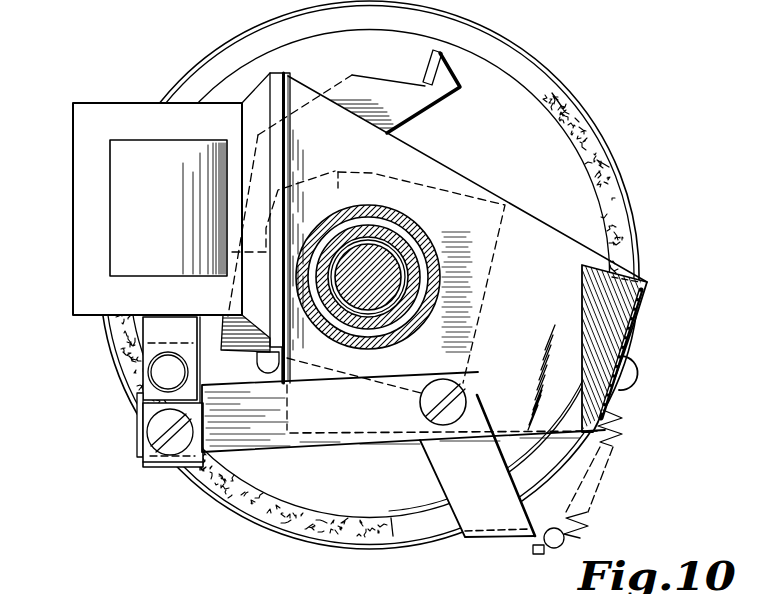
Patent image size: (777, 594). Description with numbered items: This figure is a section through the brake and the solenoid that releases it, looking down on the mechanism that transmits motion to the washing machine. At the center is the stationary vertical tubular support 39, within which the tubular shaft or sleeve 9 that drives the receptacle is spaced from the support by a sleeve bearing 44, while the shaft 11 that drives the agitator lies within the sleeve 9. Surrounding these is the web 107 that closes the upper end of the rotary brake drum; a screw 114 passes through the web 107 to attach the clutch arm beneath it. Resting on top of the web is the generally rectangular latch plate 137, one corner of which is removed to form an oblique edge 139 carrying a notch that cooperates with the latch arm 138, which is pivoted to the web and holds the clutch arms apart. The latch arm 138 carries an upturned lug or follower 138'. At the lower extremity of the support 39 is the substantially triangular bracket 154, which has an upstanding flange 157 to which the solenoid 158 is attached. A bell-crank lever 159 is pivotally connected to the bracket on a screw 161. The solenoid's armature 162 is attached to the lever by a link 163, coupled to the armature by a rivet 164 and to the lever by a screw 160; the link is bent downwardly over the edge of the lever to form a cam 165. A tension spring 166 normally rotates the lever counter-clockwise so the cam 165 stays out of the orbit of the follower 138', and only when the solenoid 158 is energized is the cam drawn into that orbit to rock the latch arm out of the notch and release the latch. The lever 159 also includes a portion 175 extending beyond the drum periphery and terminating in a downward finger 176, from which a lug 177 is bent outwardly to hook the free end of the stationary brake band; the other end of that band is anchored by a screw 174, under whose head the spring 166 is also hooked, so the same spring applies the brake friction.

The web 107 is at (570, 183).
The screw 114 is at (345, 560).
The solenoid 158 is at (128, 212).
The upstanding flange 157 is at (274, 72).
The bracket 154 is at (583, 263).
The upturned lug or follower 138' is at (469, 71).
The latch arm 138 is at (386, 80).
The oblique edge 139 is at (345, 182).
The latch plate 137 is at (518, 215).
The vertical tubular support 39 is at (437, 287).
The sleeve bearing 44 is at (422, 270).
The tubular shaft or sleeve 9 is at (410, 258).
The shaft 11 is at (387, 257).
The armature 162 is at (160, 335).
The rivet 164 is at (160, 372).
The screw 160 is at (157, 430).
The link 163 is at (140, 415).
The cam 165 is at (142, 453).
The bell-crank lever 159 is at (345, 437).
The screw 161 is at (460, 395).
The portion 175 is at (503, 488).
The finger 176 is at (505, 520).
The tension spring 166 is at (610, 468).
The screw 174 is at (640, 383).
The lug 177 is at (543, 556).